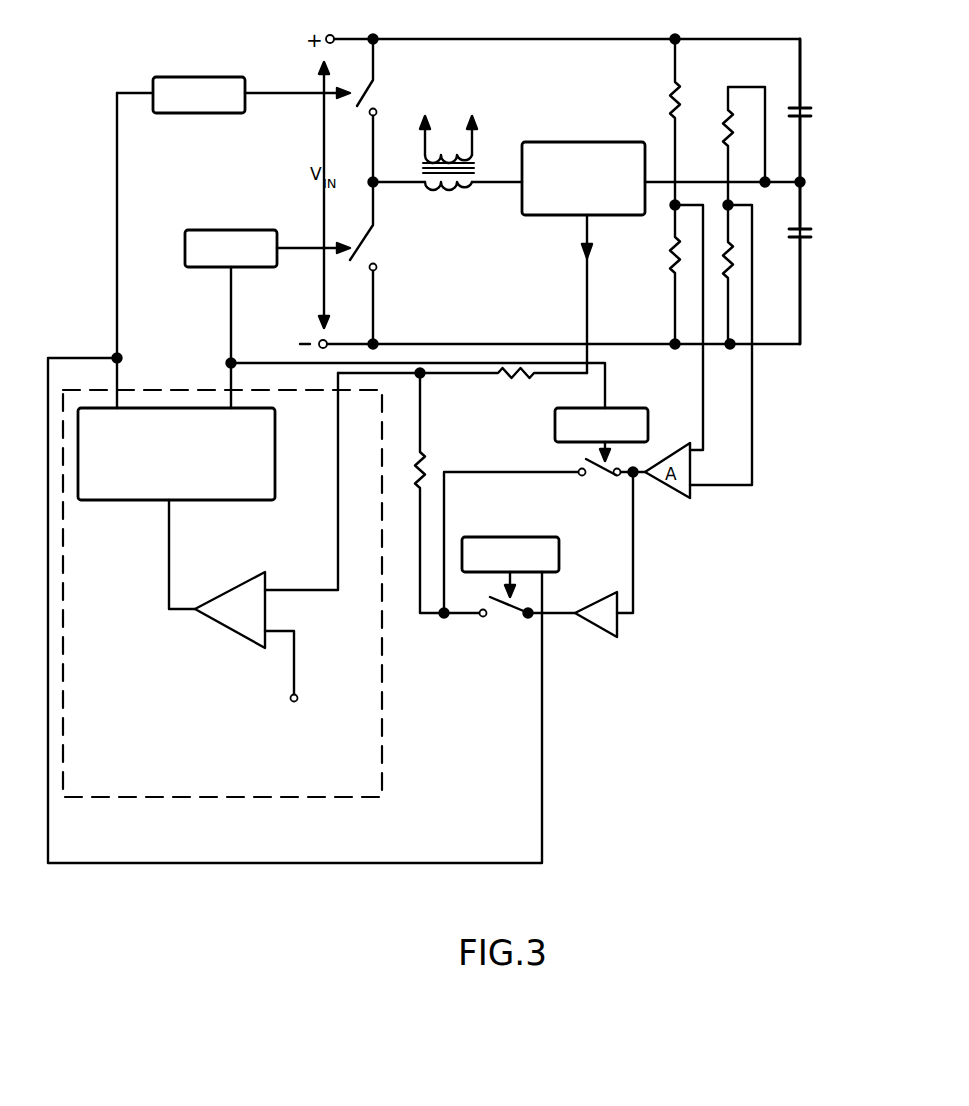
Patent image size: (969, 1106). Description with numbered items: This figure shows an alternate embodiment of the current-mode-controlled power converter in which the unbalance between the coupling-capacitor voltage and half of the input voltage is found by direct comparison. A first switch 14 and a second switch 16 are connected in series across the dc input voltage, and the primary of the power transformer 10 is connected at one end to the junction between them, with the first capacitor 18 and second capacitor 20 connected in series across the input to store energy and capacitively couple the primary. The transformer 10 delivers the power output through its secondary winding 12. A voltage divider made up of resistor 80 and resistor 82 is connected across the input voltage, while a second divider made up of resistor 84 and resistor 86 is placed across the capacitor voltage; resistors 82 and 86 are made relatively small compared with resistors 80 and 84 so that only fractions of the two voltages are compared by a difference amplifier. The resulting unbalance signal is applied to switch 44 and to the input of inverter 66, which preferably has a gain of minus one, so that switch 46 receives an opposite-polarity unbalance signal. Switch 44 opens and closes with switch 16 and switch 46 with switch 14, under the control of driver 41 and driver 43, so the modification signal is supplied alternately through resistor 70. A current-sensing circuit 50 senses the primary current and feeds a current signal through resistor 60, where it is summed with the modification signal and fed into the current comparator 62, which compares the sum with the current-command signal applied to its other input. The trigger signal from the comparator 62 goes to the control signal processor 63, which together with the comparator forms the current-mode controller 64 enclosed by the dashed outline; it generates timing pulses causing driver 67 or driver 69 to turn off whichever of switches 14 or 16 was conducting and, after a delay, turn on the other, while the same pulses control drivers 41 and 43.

The power transformer 10 is at (448, 185).
The first secondary winding 12 is at (422, 152).
The first switch 14 is at (355, 110).
The second switch 16 is at (370, 246).
The first capacitor 18 is at (812, 108).
The second capacitor 20 is at (790, 230).
The driver 41 is at (553, 426).
The driver 43 is at (514, 512).
The switch 44 is at (610, 485).
The switch 46 is at (506, 622).
The current-sensing circuit 50 is at (605, 142).
The resistor 60 is at (507, 381).
The current comparator 62 is at (226, 577).
The control signal processor 63 is at (107, 506).
The current-mode controller 64 is at (190, 798).
The inverter 66 is at (598, 632).
The driver 67 is at (207, 77).
The driver 69 is at (229, 228).
The resistor 70 is at (430, 462).
The resistor 80 is at (674, 87).
The resistor 82 is at (673, 258).
The resistor 84 is at (724, 128).
The resistor 86 is at (738, 264).